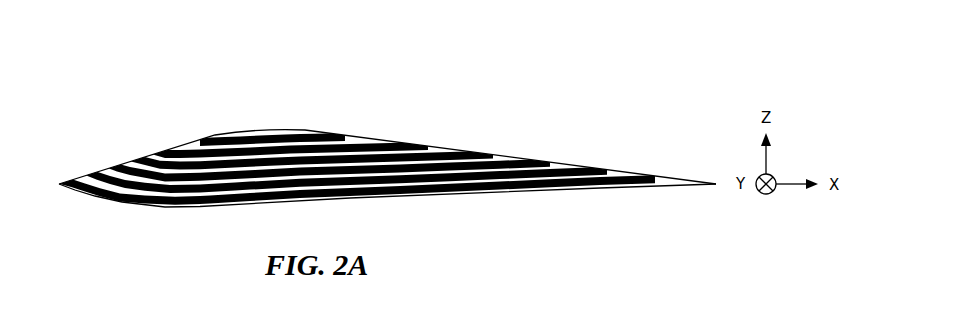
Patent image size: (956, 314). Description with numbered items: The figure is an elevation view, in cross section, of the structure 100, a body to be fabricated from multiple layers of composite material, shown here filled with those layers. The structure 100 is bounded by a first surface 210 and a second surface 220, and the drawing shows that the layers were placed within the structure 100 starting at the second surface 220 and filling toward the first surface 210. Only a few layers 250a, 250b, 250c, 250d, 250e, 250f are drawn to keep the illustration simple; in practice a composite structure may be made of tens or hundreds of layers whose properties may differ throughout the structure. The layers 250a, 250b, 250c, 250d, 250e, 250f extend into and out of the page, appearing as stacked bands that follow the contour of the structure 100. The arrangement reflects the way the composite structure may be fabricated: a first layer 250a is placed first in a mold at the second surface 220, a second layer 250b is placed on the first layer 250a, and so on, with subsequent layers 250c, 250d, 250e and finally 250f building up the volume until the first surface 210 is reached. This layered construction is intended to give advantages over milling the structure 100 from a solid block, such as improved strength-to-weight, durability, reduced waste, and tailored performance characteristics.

The structure 100 is at (377, 135).
The first surface 210 is at (193, 142).
The second surface 220 is at (72, 190).
The first layer 250a is at (357, 190).
The second layer 250b is at (346, 180).
The layer 250c is at (327, 170).
The layer 250d is at (306, 159).
The layer 250e is at (284, 150).
The layer 250f is at (272, 139).